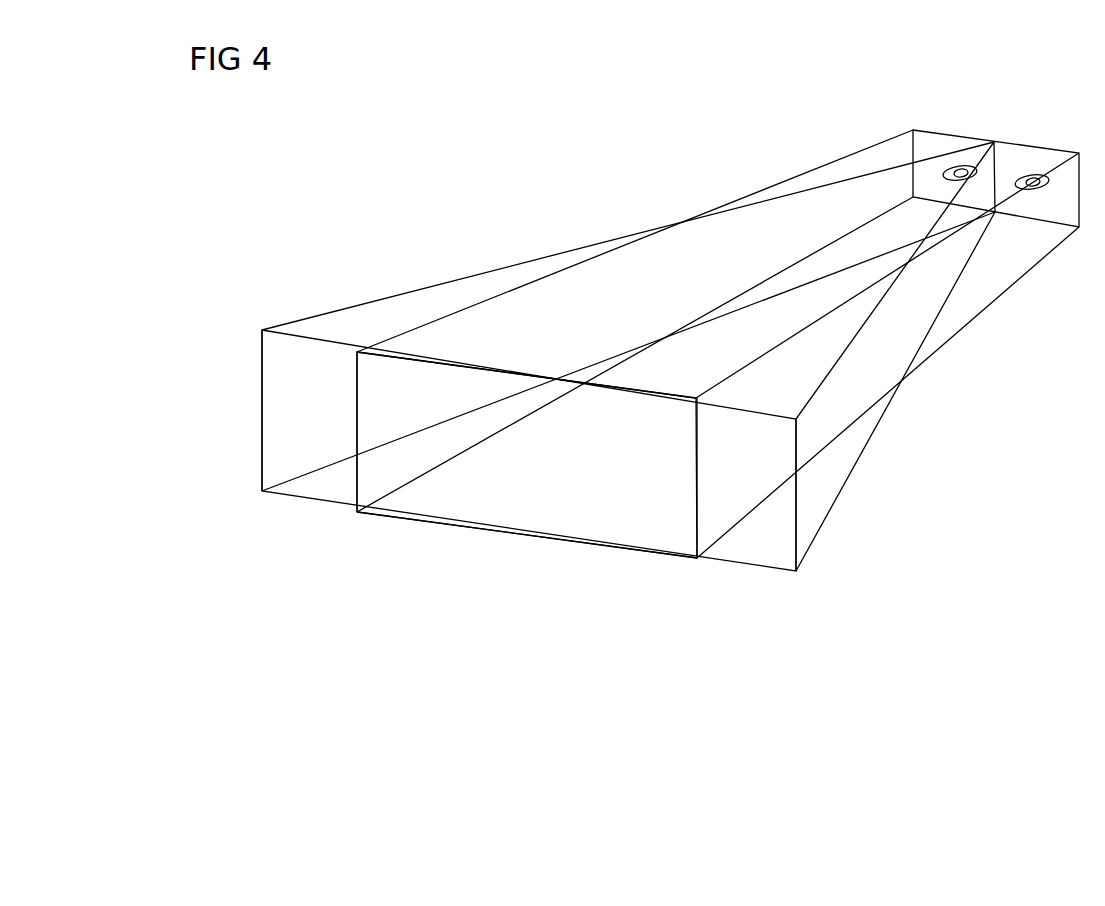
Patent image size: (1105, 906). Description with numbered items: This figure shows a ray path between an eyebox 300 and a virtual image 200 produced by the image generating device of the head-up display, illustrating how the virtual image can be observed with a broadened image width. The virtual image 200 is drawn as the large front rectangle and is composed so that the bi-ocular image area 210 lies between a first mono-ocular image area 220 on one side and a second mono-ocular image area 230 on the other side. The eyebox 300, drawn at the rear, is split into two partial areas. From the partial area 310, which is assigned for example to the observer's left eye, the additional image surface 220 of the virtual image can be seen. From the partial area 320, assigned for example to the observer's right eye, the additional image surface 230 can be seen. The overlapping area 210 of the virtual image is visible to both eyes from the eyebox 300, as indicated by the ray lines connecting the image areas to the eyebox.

The virtual image 200 is at (593, 690).
The bi-ocular image area 210 is at (530, 503).
The mono-ocular image area 220 is at (372, 485).
The mono-ocular image area 230 is at (768, 545).
The eyebox 300 is at (890, 143).
The partial area 310 is at (1017, 168).
The partial area 320 is at (943, 145).